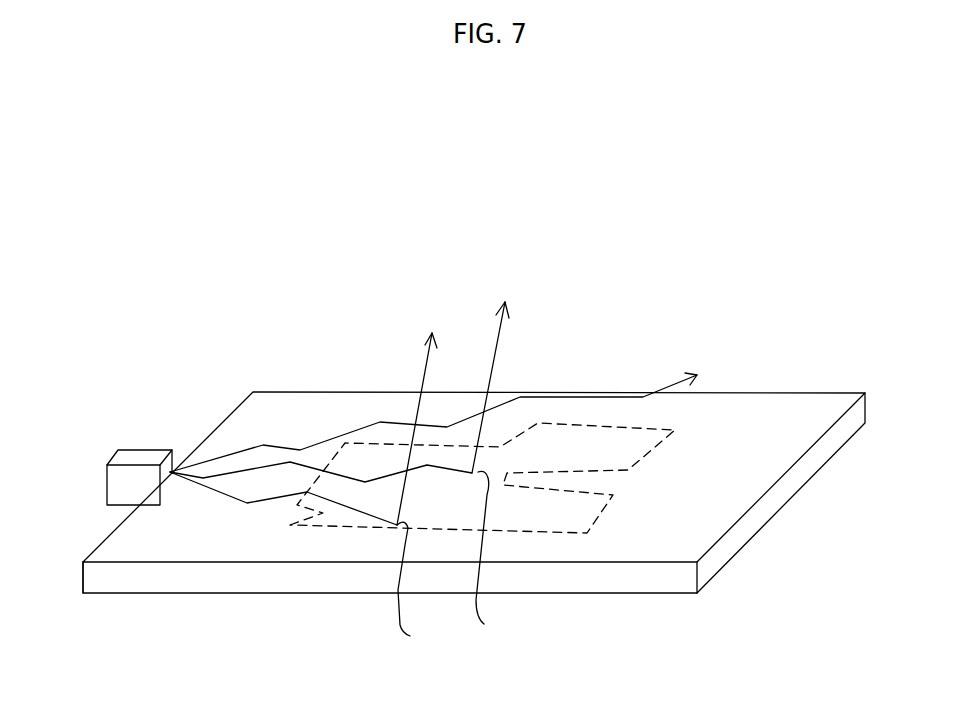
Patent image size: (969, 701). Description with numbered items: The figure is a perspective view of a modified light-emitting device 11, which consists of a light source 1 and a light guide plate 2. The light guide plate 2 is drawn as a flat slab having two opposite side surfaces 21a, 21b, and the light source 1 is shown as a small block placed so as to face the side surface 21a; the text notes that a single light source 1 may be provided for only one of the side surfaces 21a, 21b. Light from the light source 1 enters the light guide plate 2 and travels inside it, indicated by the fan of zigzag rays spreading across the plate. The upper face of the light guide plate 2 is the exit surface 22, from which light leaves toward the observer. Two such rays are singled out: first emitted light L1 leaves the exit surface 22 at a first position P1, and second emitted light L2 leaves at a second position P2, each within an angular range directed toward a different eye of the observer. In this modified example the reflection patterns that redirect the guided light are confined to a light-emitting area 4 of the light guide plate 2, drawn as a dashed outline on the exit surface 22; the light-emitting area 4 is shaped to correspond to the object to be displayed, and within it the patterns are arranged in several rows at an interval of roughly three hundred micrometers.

The light source 1 is at (143, 457).
The light guide plate 2 is at (459, 489).
The light-emitting area 4 is at (558, 533).
The light-emitting device 11 is at (777, 268).
The side surface 21a is at (83, 582).
The side surface 21b is at (745, 525).
The exit surface 22 is at (738, 490).
The first emitted light L1 is at (500, 345).
The second emitted light L2 is at (421, 369).
The first position P1 is at (482, 561).
The second position P2 is at (416, 587).